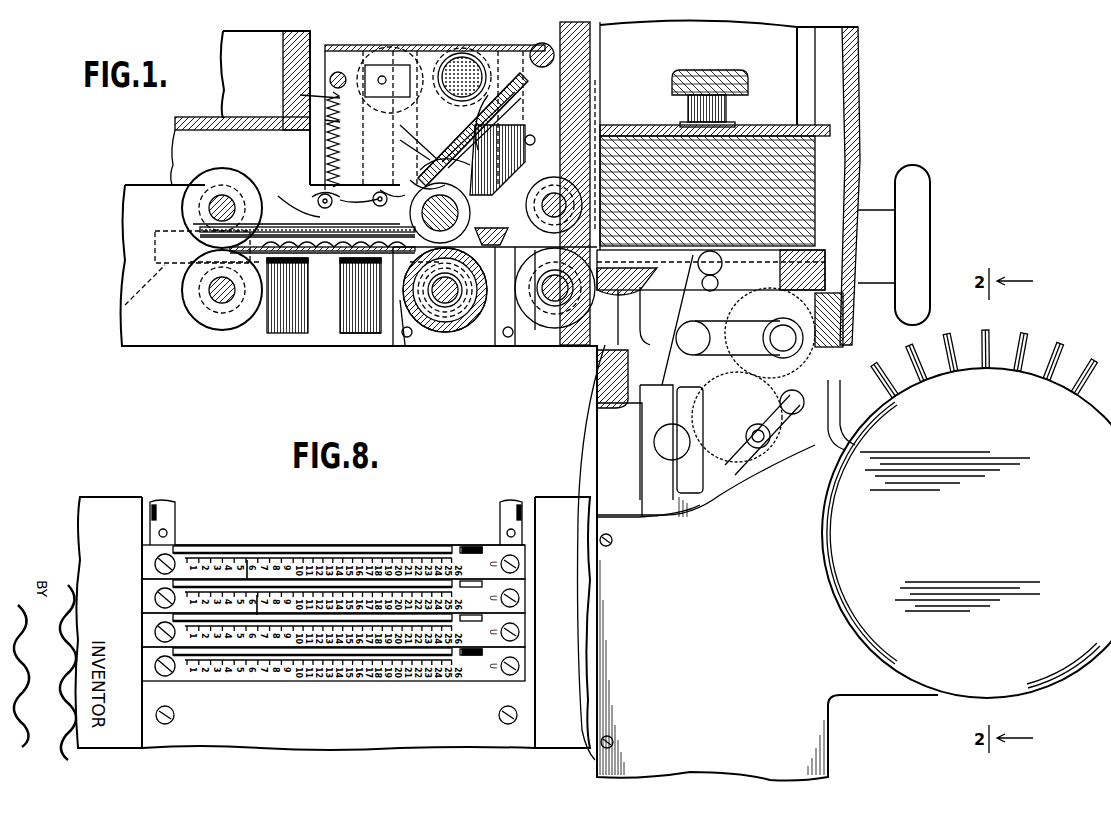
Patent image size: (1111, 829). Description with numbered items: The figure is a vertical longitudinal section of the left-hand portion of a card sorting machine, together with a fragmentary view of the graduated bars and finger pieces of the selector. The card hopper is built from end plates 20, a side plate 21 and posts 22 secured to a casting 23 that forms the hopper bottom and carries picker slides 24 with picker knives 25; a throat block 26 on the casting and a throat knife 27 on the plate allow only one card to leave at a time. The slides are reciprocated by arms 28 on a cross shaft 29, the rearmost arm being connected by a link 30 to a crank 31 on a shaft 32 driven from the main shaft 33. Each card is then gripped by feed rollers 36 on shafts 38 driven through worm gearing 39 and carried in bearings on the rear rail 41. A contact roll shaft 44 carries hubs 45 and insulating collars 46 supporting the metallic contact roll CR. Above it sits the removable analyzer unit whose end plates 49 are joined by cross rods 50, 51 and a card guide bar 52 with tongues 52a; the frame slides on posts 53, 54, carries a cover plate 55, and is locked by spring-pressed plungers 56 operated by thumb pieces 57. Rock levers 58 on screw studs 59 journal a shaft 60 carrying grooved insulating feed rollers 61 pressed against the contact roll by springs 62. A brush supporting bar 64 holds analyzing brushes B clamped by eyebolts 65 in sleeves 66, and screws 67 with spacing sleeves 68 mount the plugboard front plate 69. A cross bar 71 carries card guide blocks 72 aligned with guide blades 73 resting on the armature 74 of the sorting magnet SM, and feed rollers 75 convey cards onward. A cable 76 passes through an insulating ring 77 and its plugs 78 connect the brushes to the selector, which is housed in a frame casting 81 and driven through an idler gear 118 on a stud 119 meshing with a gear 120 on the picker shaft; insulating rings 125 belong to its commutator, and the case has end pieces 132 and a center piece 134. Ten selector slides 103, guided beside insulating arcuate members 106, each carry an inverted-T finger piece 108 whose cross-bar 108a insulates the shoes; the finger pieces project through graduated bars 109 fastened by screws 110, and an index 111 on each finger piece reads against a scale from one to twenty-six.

In FIG. 1, the end plates 20 is at (780, 52).
In FIG. 1, the side plate 21 is at (600, 58).
In FIG. 1, the posts 22 is at (858, 88).
In FIG. 1, the casting 23 is at (648, 287).
In FIG. 1, the picker slides 24 is at (748, 265).
In FIG. 1, the picker knives 25 is at (830, 235).
In FIG. 1, the throat block 26 is at (618, 290).
In FIG. 1, the throat knife 27 is at (555, 318).
In FIG. 1, the arms 28 is at (672, 352).
In FIG. 1, the cross shaft 29 is at (660, 450).
In FIG. 1, the link 30 is at (725, 330).
In FIG. 1, the crank 31 is at (790, 345).
In FIG. 1, the shaft 32 is at (737, 417).
In FIG. 1, the main shaft 33 is at (125, 305).
In FIG. 1, the feed rollers 36 is at (556, 305).
In FIG. 1, the shafts 38 is at (553, 320).
In FIG. 1, the worm gearing 39 is at (545, 310).
In FIG. 1, the rear rail 41 is at (152, 345).
In FIG. 1, the contact roll shaft 44 is at (441, 303).
In FIG. 1, the hubs 45 is at (448, 308).
In FIG. 1, the insulating collars 46 is at (437, 320).
In FIG. 1, the end plates 49 is at (345, 152).
In FIG. 1, the cross rod 50 is at (338, 72).
In FIG. 1, the cross rod 51 is at (536, 46).
In FIG. 1, the card guide bar 52 is at (482, 320).
In FIG. 1, the tongues 52a is at (495, 295).
In FIG. 1, the post 53 is at (400, 140).
In FIG. 1, the post 54 is at (600, 88).
In FIG. 1, the cover plate 55 is at (420, 38).
In FIG. 1, the spring-pressed plungers 56 is at (300, 95).
In FIG. 1, the thumb pieces 57 is at (386, 47).
In FIG. 1, the rock levers 58 is at (354, 196).
In FIG. 1, the screw studs 59 is at (316, 200).
In FIG. 1, the shaft 60 is at (497, 152).
In FIG. 1, the feed rollers 61 is at (416, 190).
In FIG. 1, the springs 62 is at (325, 120).
In FIG. 1, the brush supporting bar 64 is at (480, 142).
In FIG. 1, the eyebolts 65 is at (548, 195).
In FIG. 1, the sleeves 66 is at (400, 125).
In FIG. 1, the screws 67 is at (488, 95).
In FIG. 1, the spacing sleeves 68 is at (531, 134).
In FIG. 1, the plugboard front plate 69 is at (495, 85).
In FIG. 1, the cross bar 71 is at (384, 188).
In FIG. 1, the card guide blocks 72 is at (278, 196).
In FIG. 1, the guide blades 73 is at (297, 265).
In FIG. 1, the armature 74 is at (331, 255).
In FIG. 1, the feed rollers 75 is at (190, 275).
In FIG. 1, the cable 76 is at (455, 62).
In FIG. 1, the ring 77 is at (470, 50).
In FIG. 1, the plugs 78 is at (420, 165).
In FIG. 1, the frame casting 81 is at (772, 430).
In FIG. 8, the selector slides 103 is at (342, 545).
In FIG. 8, the arcuate members 106 is at (500, 515).
In FIG. 1, the finger piece 108 is at (1080, 378).
In FIG. 8, the finger piece 108 is at (476, 548).
In FIG. 8, the cross-bar 108a is at (472, 654).
In FIG. 8, the graduated bars 109 is at (257, 595).
In FIG. 8, the screws 110 is at (520, 565).
In FIG. 1, the index 111 is at (990, 365).
In FIG. 8, the index 111 is at (520, 630).
In FIG. 1, the idler gear 118 is at (690, 452).
In FIG. 1, the stud 119 is at (752, 433).
In FIG. 1, the gear 120 is at (778, 296).
In FIG. 1, the rings 125 is at (716, 490).
In FIG. 1, the end pieces 132 is at (1072, 618).
In FIG. 8, the end pieces 132 is at (549, 505).
In FIG. 8, the center piece 134 is at (298, 740).
In FIG. 1, the analyzing brush B is at (459, 214).
In FIG. 1, the contact roll CR is at (404, 312).
In FIG. 1, the sorting magnet SM is at (358, 318).